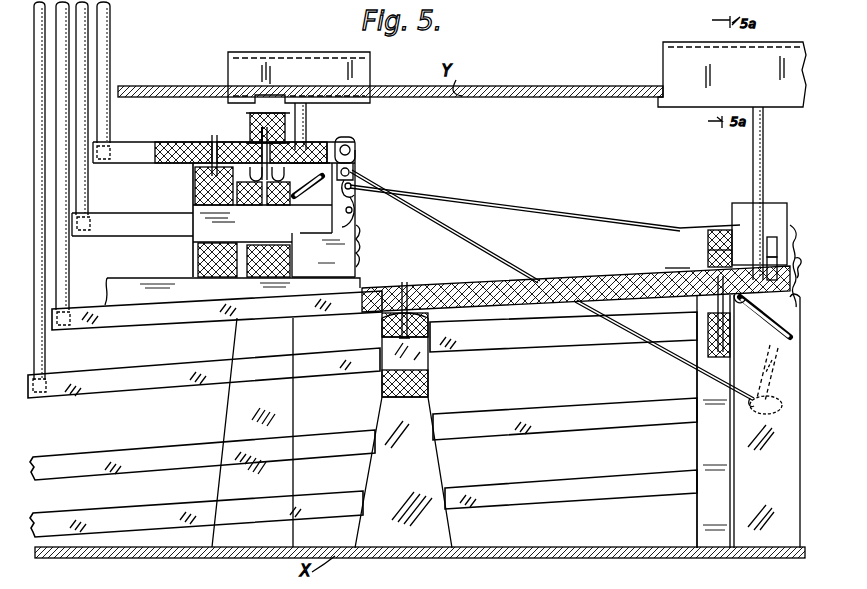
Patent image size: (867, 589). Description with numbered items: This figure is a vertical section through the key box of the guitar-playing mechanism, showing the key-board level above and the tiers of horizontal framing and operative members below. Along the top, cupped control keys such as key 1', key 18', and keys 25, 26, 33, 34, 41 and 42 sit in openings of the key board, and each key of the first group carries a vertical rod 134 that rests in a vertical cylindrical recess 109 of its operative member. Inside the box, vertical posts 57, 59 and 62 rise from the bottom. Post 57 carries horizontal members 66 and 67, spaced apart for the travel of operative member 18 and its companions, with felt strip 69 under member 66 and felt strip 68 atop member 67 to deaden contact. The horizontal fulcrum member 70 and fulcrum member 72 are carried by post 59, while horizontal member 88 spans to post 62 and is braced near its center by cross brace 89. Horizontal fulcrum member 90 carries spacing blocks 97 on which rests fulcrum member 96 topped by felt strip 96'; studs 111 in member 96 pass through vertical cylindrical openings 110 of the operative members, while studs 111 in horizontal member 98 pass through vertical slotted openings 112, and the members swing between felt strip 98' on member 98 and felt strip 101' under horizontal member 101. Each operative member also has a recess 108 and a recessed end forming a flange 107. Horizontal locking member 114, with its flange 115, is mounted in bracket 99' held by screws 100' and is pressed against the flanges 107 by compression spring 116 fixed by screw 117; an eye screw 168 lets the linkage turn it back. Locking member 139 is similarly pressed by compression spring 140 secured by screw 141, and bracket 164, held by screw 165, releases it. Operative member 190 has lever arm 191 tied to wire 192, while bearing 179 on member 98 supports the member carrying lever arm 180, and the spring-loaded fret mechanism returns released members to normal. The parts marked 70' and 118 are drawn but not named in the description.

The control key 1' is at (313, 74).
The operative member 18 is at (217, 310).
The control key 18' is at (712, 74).
The control key 25 is at (563, 332).
The control key 26 is at (204, 373).
The control key 33 is at (565, 419).
The control key 34 is at (202, 455).
The control key 41 is at (571, 489).
The control key 42 is at (196, 514).
The vertical post 57 is at (784, 474).
The vertical post 59 is at (380, 464).
The vertical post 62 is at (234, 406).
The horizontal member 66 is at (708, 238).
The horizontal member 67 is at (697, 320).
The felt strip 68 is at (740, 316).
The felt strip 69 is at (708, 258).
The horizontal fulcrum member 70 is at (422, 325).
The block top 70' is at (381, 328).
The horizontal fulcrum member 72 is at (430, 380).
The horizontal member 88 is at (247, 244).
The cross brace 89 is at (120, 280).
The horizontal fulcrum member 90 is at (198, 266).
The horizontal fulcrum member 96 is at (196, 186).
The felt strip 96' is at (180, 220).
The block 97 is at (200, 226).
The horizontal member 98 is at (263, 195).
The felt strip 98' is at (226, 211).
The bracket 99' is at (323, 255).
The screw 100' is at (383, 246).
The horizontal member 101 is at (239, 120).
The felt strip 101' is at (245, 128).
The flange 107 is at (360, 126).
The vertical cylindrical recess 108 is at (110, 148).
The vertical cylindrical recess 109 is at (306, 141).
The vertical cylindrical opening 110 is at (204, 142).
The stud 111 is at (210, 138).
The vertical slotted opening 112 is at (220, 140).
The horizontal locking member 114 is at (356, 148).
The flange 115 is at (356, 166).
The compression spring 116 is at (355, 194).
The screw 117 is at (356, 224).
The rods 118 is at (36, 73).
The vertical rod 134 is at (370, 98).
The horizontal locking member 139 is at (777, 247).
The compression spring 140 is at (777, 373).
The screw 141 is at (768, 348).
The bracket 164 is at (798, 226).
The screw 165 is at (807, 267).
The eye screw 168 is at (395, 184).
The bearing 179 is at (292, 200).
The lever arm 180 is at (300, 115).
The operative member 190 is at (752, 295).
The lever arm 191 is at (765, 405).
The wire 192 is at (495, 244).